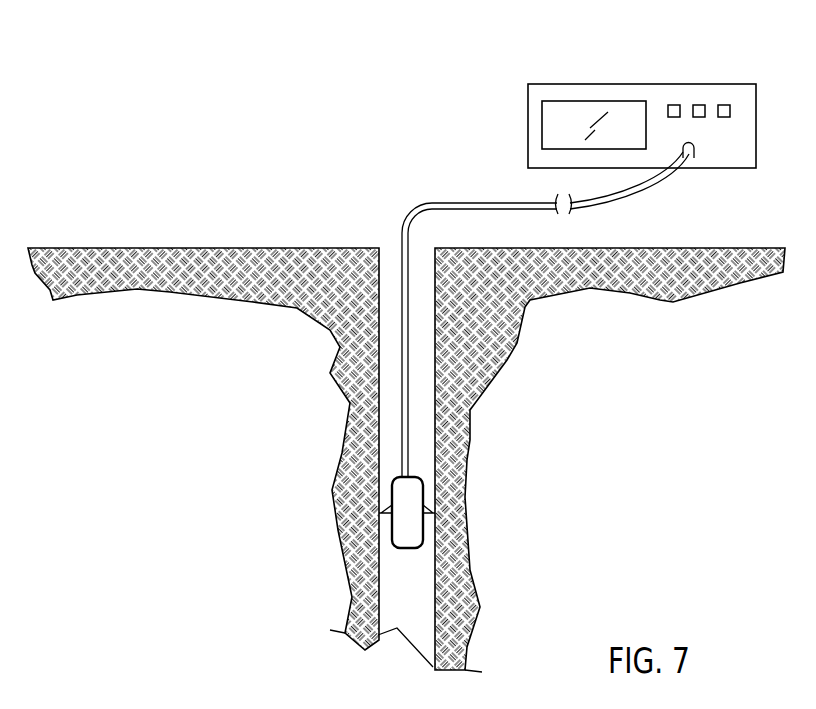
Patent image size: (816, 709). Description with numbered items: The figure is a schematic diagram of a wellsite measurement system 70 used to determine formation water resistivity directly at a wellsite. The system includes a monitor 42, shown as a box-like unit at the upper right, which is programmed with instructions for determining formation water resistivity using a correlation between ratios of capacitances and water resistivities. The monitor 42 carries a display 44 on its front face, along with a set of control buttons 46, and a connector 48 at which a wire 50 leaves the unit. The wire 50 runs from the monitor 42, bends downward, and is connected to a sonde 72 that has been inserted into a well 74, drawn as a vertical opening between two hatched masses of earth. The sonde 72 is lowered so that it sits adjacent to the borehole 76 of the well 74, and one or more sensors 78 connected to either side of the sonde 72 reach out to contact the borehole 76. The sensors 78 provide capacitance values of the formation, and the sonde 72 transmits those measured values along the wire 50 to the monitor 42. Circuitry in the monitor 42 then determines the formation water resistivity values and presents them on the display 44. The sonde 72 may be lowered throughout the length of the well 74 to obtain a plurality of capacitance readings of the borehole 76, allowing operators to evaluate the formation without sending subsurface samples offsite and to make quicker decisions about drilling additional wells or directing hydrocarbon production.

The wellsite measurement system 70 is at (649, 101).
The monitor 42 is at (707, 84).
The display 44 is at (600, 100).
The buttons 46 is at (727, 118).
The connector 48 is at (694, 160).
The wire 50 is at (603, 205).
The well 74 is at (389, 244).
The sonde 72 is at (413, 478).
The sensors 78 is at (386, 511).
The borehole 76 is at (435, 566).